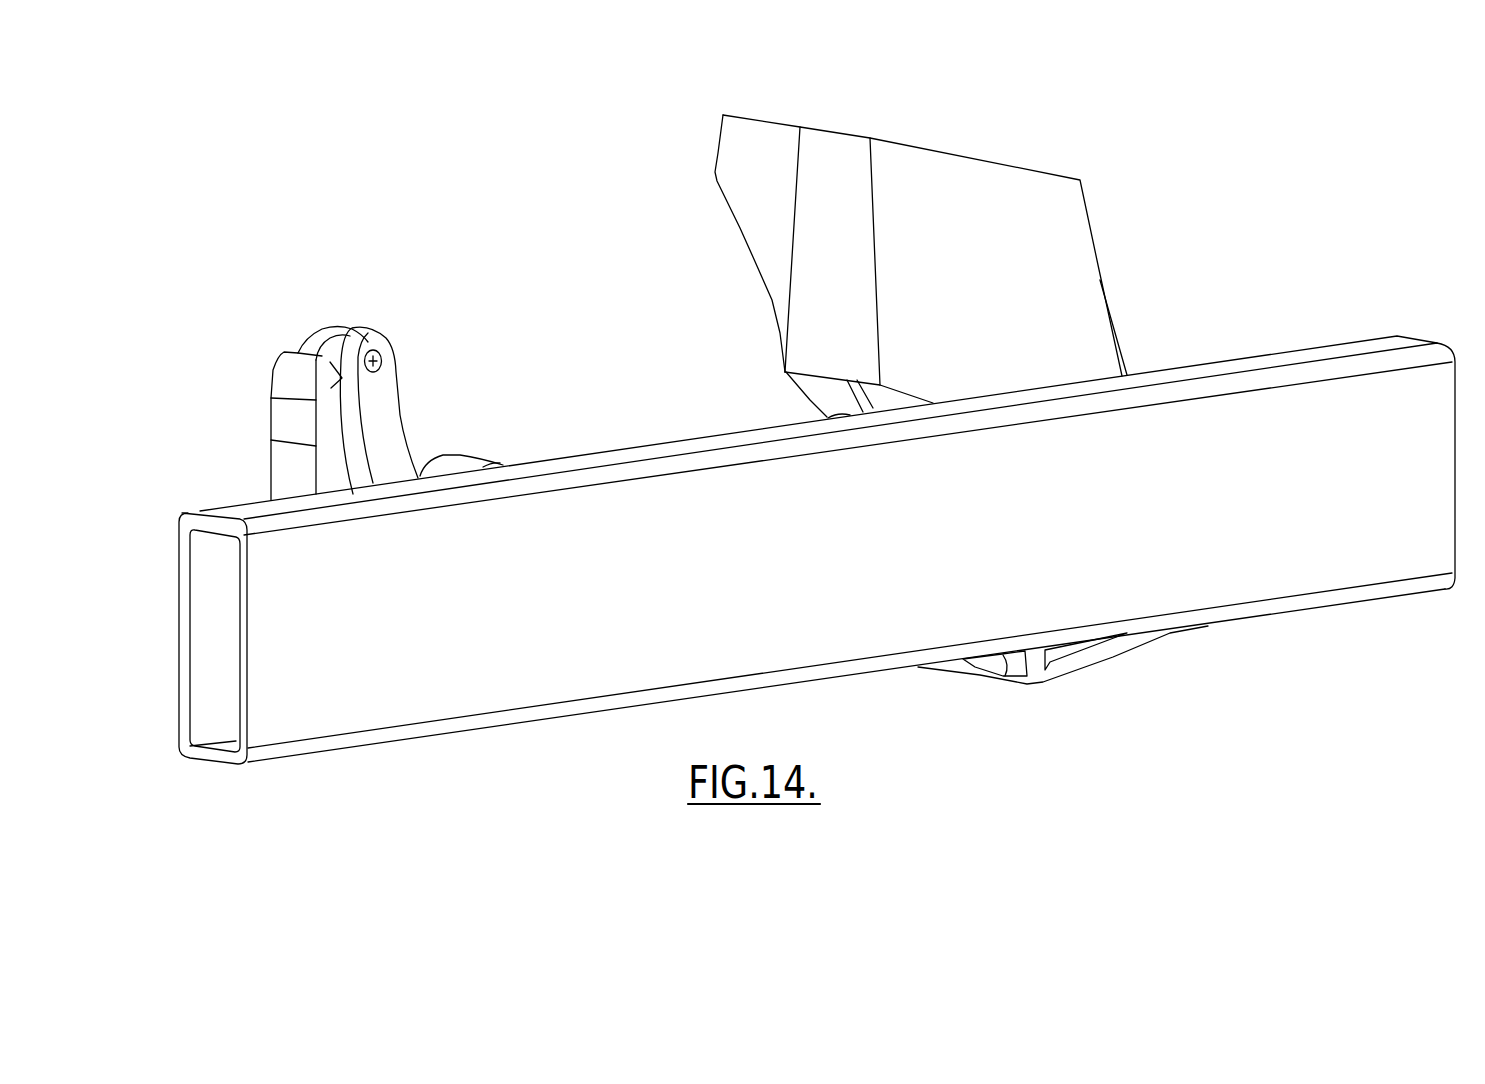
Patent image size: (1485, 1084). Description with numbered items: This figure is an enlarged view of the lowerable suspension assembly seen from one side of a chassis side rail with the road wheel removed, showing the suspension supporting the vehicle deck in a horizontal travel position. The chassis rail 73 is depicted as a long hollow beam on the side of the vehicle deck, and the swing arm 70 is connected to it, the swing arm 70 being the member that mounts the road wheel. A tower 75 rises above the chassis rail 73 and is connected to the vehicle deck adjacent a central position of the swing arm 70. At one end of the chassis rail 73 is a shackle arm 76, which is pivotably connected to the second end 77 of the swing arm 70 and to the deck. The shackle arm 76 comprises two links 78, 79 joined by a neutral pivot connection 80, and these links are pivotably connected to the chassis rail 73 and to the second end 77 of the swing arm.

The swing arm 70 is at (1025, 697).
The chassis rail 73 is at (425, 663).
The tower 75 is at (1000, 140).
The shackle arm 76 is at (326, 370).
The second end of the swing arm 77 is at (503, 465).
The link 78 is at (415, 367).
The link 79 is at (285, 422).
The neutral pivot connection 80 is at (403, 306).